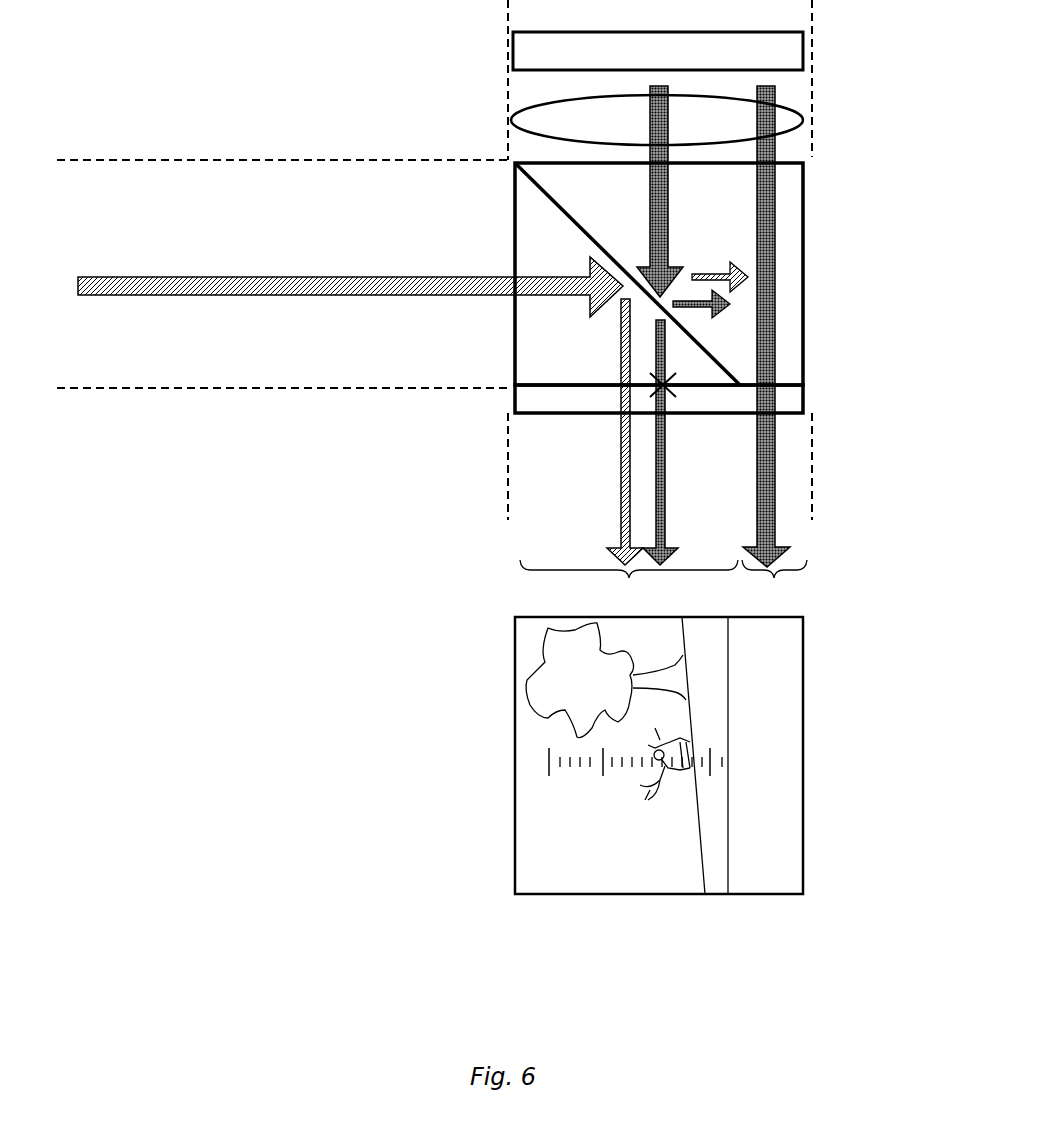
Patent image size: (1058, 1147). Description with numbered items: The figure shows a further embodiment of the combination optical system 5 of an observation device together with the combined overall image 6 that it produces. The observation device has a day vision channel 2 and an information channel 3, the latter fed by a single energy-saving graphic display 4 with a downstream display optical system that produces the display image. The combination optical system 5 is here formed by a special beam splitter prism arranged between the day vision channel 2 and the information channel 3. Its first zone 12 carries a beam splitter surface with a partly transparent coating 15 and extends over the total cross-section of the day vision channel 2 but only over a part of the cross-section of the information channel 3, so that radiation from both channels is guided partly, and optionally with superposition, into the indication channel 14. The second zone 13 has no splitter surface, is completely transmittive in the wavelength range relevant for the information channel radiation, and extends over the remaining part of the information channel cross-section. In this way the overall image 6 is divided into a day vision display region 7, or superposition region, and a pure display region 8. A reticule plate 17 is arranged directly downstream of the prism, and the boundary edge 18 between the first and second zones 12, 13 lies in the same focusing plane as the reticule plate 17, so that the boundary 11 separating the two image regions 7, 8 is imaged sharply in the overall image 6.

The day vision channel 2 is at (373, 177).
The information channel 3 is at (795, 88).
The graphic display 4 is at (785, 55).
The combination optical system 5 is at (793, 197).
The combined overall image 6 is at (466, 856).
The day vision display region 7 is at (627, 887).
The pure display region 8 is at (760, 887).
The boundary 11 is at (730, 875).
The first zone 12 is at (629, 455).
The second zone 13 is at (774, 346).
The indication channel 14 is at (527, 462).
The partly transparent coating 15 is at (540, 192).
The reticule plate 17 is at (665, 388).
The boundary edge 18 is at (737, 387).